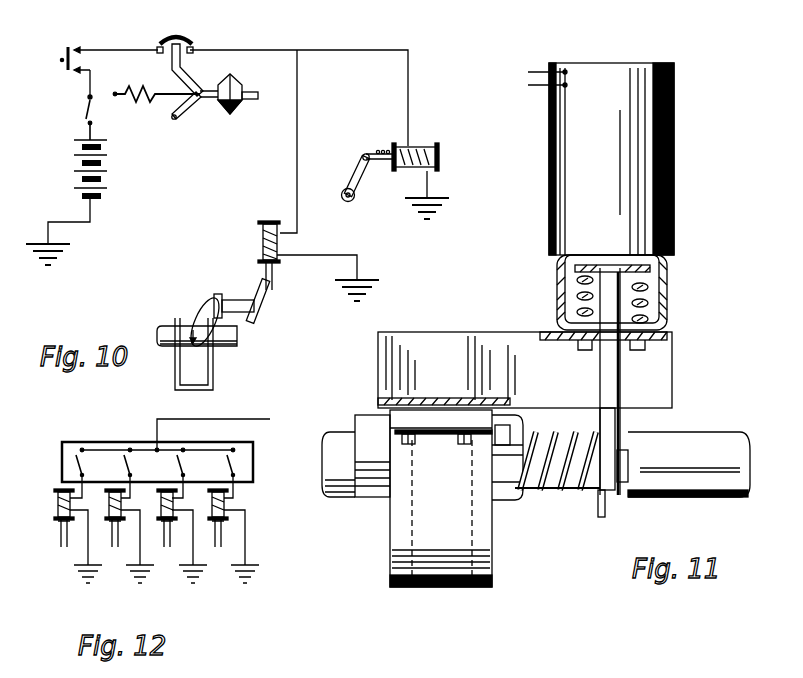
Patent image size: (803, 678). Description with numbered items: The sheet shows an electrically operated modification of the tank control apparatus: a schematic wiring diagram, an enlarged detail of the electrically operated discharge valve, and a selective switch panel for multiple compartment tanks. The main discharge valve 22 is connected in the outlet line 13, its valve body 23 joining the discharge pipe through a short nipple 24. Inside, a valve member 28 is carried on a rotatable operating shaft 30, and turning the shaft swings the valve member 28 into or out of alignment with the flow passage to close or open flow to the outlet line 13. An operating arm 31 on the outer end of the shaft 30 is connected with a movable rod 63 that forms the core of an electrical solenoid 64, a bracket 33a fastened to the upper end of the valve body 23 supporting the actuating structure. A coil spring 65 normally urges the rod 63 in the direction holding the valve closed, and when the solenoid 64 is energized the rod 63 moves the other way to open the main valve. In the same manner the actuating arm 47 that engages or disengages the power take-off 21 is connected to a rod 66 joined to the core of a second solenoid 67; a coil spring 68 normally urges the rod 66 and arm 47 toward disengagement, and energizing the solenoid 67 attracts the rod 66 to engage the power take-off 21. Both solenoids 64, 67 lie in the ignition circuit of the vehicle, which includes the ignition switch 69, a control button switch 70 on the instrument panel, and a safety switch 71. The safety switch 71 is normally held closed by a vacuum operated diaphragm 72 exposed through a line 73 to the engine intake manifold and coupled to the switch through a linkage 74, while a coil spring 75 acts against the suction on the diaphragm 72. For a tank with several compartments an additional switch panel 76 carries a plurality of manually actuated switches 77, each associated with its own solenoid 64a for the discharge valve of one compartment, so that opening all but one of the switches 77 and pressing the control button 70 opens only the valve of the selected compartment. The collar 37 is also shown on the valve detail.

In FIG. 11, the outlet line 13 is at (716, 435).
In FIG. 10, the power take-off 21 is at (346, 164).
In FIG. 10, the main discharge valve 22 is at (198, 296).
In FIG. 11, the main discharge valve 22 is at (467, 587).
In FIG. 11, the valve body 23 is at (392, 562).
In FIG. 11, the short nipple 24 is at (340, 500).
In FIG. 10, the valve member 28 is at (200, 318).
In FIG. 10, the operating shaft 30 is at (236, 284).
In FIG. 11, the operating shaft 30 is at (556, 495).
In FIG. 10, the operating arm 31 is at (262, 310).
In FIG. 11, the operating arm 31 is at (600, 516).
In FIG. 11, the bracket 33a is at (378, 387).
In FIG. 11, the collar 37 is at (533, 503).
In FIG. 10, the actuating arm 47 is at (358, 186).
In FIG. 10, the movable rod 63 is at (273, 276).
In FIG. 11, the movable rod 63 is at (622, 386).
In FIG. 10, the electrical solenoid 64 is at (262, 250).
In FIG. 11, the electrical solenoid 64 is at (676, 214).
In FIG. 12, the solenoid 64a is at (58, 500).
In FIG. 11, the coil spring 65 is at (656, 289).
In FIG. 10, the rod 66 is at (376, 138).
In FIG. 10, the second solenoid 67 is at (430, 146).
In FIG. 10, the coil spring 68 is at (380, 161).
In FIG. 10, the ignition switch 69 is at (85, 107).
In FIG. 10, the control button switch 70 is at (65, 50).
In FIG. 10, the safety switch 71 is at (191, 40).
In FIG. 10, the vacuum operated diaphragm 72 is at (240, 78).
In FIG. 10, the line 73 is at (255, 99).
In FIG. 10, the linkage 74 is at (190, 112).
In FIG. 10, the coil spring 75 is at (139, 100).
In FIG. 12, the switch panel 76 is at (98, 442).
In FIG. 12, the switches 77 is at (72, 467).